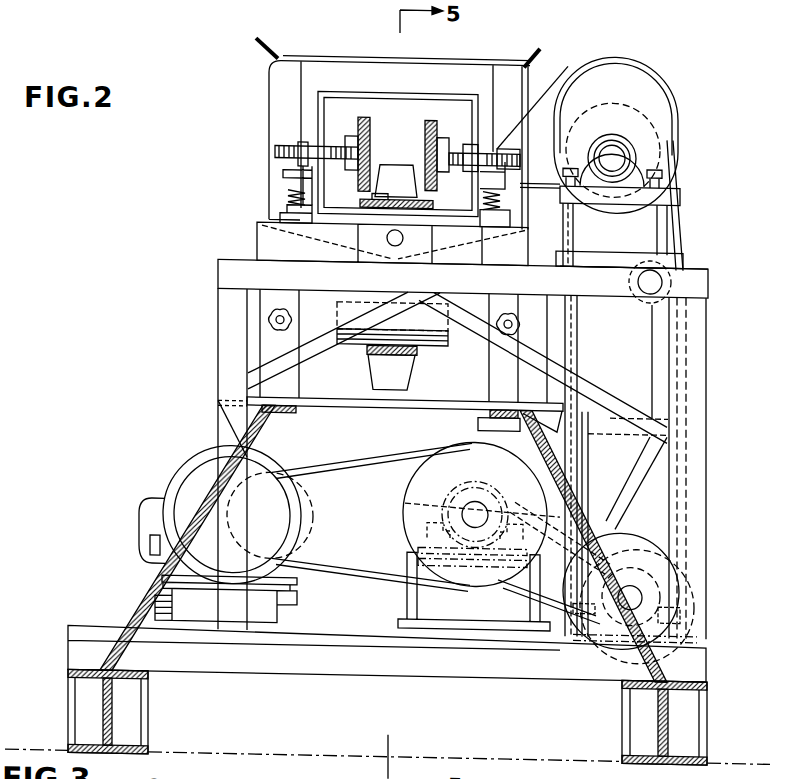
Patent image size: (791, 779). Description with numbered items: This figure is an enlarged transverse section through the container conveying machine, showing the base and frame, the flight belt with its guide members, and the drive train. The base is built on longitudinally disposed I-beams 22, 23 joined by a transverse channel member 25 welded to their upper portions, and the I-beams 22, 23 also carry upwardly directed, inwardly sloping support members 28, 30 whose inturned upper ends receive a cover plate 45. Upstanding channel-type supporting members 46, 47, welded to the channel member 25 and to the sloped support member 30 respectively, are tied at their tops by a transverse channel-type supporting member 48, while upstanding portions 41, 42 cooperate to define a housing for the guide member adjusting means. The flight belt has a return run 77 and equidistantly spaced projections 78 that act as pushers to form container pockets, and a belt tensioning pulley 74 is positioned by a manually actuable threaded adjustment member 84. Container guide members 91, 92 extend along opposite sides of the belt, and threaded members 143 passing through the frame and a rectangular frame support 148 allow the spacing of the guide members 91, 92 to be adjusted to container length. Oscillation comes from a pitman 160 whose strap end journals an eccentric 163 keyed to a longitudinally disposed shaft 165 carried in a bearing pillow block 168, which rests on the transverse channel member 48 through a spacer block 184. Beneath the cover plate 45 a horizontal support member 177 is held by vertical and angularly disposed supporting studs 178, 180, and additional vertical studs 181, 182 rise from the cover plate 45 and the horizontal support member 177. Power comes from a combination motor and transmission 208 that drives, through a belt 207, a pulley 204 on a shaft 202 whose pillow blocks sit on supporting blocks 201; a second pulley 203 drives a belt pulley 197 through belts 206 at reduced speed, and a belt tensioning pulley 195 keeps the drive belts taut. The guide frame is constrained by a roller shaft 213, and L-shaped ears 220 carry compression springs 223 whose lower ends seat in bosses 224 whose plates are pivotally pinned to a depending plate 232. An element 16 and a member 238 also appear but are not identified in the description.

The foot 16 is at (374, 196).
The I-beam 22 is at (112, 712).
The I-beam 23 is at (658, 710).
The channel member 25 is at (348, 676).
The support member 28 is at (690, 668).
The support member 30 is at (128, 640).
The upstanding portion 41 is at (505, 70).
The upstanding portion 42 is at (282, 66).
The cover plate 45 is at (366, 410).
The upstanding channel-type supporting member 46 is at (706, 510).
The upstanding channel-type supporting member 47 is at (218, 345).
The transverse channel-type supporting member 48 is at (708, 277).
The belt tensioning pulley 74 is at (352, 330).
The return run 77 is at (382, 370).
The projections 78 is at (410, 378).
The threaded adjustment member 84 is at (273, 320).
The container guide member 91 is at (430, 116).
The container guide member 92 is at (362, 114).
The threaded member 143 is at (280, 148).
The rectangular frame support 148 is at (372, 94).
The pitman 160 is at (547, 96).
The eccentric 163 is at (640, 88).
The shaft 165 is at (620, 150).
The bearing pillow block 168 is at (655, 182).
The horizontal support member 177 is at (480, 420).
The supporting stud 178 is at (580, 458).
The supporting stud 180 is at (640, 460).
The vertical stud 181 is at (566, 345).
The vertical stud 182 is at (650, 368).
The spacer block 184 is at (576, 240).
The belt tensioning pulley 195 is at (680, 262).
The belt pulley 197 is at (680, 550).
The supporting block 201 is at (407, 598).
The shaft 202 is at (475, 513).
The pulley 203 is at (425, 507).
The pulley 204 is at (402, 485).
The belt 206 is at (615, 527).
The belt 207 is at (325, 470).
The combination motor and transmission 208 is at (200, 478).
The shaft 213 is at (390, 250).
The L-shaped ear 220 is at (285, 175).
The compression spring 223 is at (290, 196).
The boss 224 is at (286, 212).
The depending plate 232 is at (362, 240).
The support bar 238 is at (262, 228).